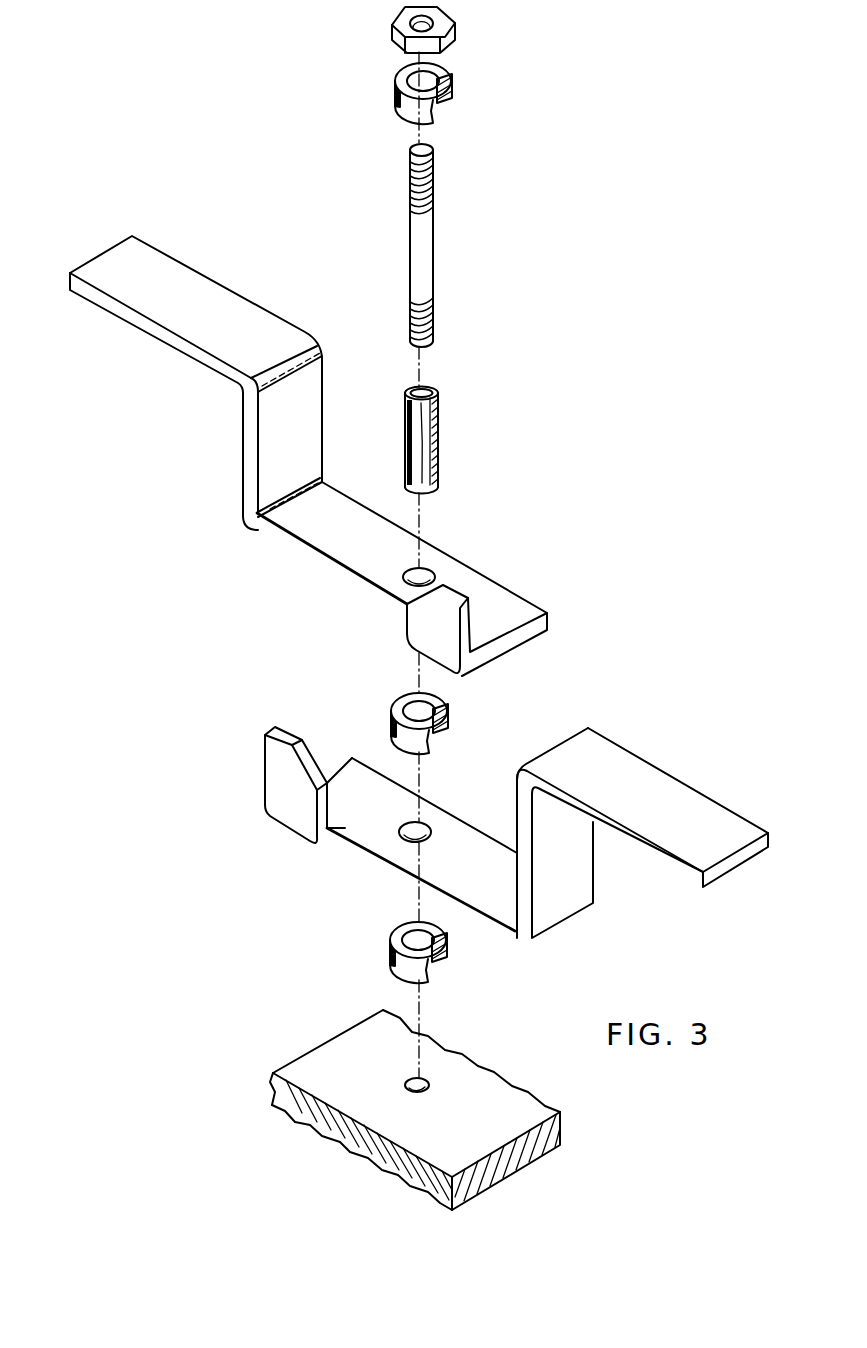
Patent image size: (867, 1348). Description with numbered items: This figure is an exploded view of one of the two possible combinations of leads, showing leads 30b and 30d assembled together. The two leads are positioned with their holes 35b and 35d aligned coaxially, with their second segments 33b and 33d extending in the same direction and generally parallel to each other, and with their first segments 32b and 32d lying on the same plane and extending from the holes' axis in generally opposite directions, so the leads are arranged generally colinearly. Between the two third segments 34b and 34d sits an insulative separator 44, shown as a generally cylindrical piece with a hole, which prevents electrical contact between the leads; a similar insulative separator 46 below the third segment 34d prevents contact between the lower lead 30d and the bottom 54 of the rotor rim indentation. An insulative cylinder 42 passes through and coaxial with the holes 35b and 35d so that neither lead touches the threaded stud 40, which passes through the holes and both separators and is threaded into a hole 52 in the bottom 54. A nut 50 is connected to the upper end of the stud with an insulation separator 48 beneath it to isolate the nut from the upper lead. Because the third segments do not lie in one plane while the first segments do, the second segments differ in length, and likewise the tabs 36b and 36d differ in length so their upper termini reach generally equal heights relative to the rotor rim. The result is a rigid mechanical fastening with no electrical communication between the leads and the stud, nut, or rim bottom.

The lead 30b is at (189, 474).
The first segment 32b is at (190, 283).
The second segment 33b is at (308, 397).
The third segment 34b is at (379, 579).
The hole 35b is at (412, 569).
The tab 36b is at (413, 630).
The lead 30d is at (721, 737).
The first segment 32d is at (723, 813).
The second segment 33d is at (583, 887).
The third segment 34d is at (411, 844).
The hole 35d is at (420, 827).
The tab 36d is at (280, 783).
The threaded stud 40 is at (428, 278).
The insulative cylinder 42 is at (437, 452).
The insulative separator 44 is at (392, 722).
The insulative separator 46 is at (390, 960).
The insulation separator 48 is at (396, 100).
The nut 50 is at (393, 36).
The hole 52 is at (408, 1081).
The bottom of the rotor rim indentation 54 is at (475, 1073).